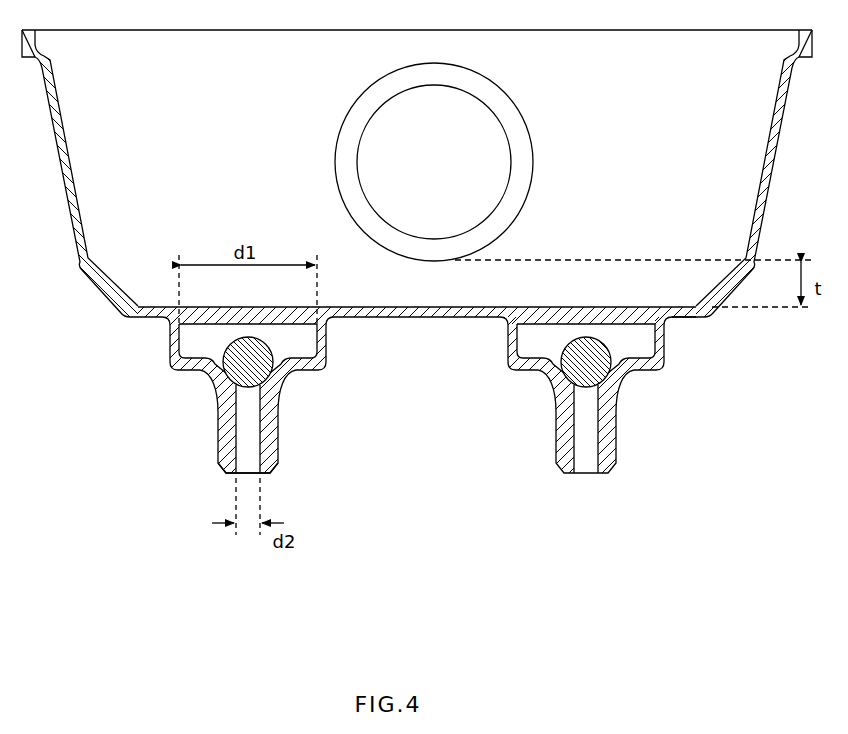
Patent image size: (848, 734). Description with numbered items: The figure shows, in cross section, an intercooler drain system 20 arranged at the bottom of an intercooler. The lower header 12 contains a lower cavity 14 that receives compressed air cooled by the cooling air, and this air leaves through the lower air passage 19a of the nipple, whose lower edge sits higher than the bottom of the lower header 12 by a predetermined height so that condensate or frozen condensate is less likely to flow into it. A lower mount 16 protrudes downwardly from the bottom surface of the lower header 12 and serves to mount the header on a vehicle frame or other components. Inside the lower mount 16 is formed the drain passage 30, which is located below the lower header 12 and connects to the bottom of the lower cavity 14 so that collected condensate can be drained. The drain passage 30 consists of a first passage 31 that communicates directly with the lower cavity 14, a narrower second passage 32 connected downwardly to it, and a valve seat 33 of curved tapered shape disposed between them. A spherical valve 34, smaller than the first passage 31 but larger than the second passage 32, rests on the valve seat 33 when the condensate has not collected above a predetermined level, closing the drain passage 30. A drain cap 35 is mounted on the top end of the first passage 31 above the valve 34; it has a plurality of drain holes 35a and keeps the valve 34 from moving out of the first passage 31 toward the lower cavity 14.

The lower header 12 is at (770, 152).
The lower cavity 14 is at (168, 160).
The lower air passage 19a is at (414, 172).
The lower mount 16 is at (273, 440).
The intercooler drain system 20 is at (204, 492).
The drain passage 30 is at (93, 365).
The first passage 31 is at (202, 342).
The second passage 32 is at (246, 428).
The valve seat 33 is at (212, 374).
The valve 34 is at (258, 366).
The drain cap 35 is at (322, 342).
The drain holes 35a is at (253, 313).